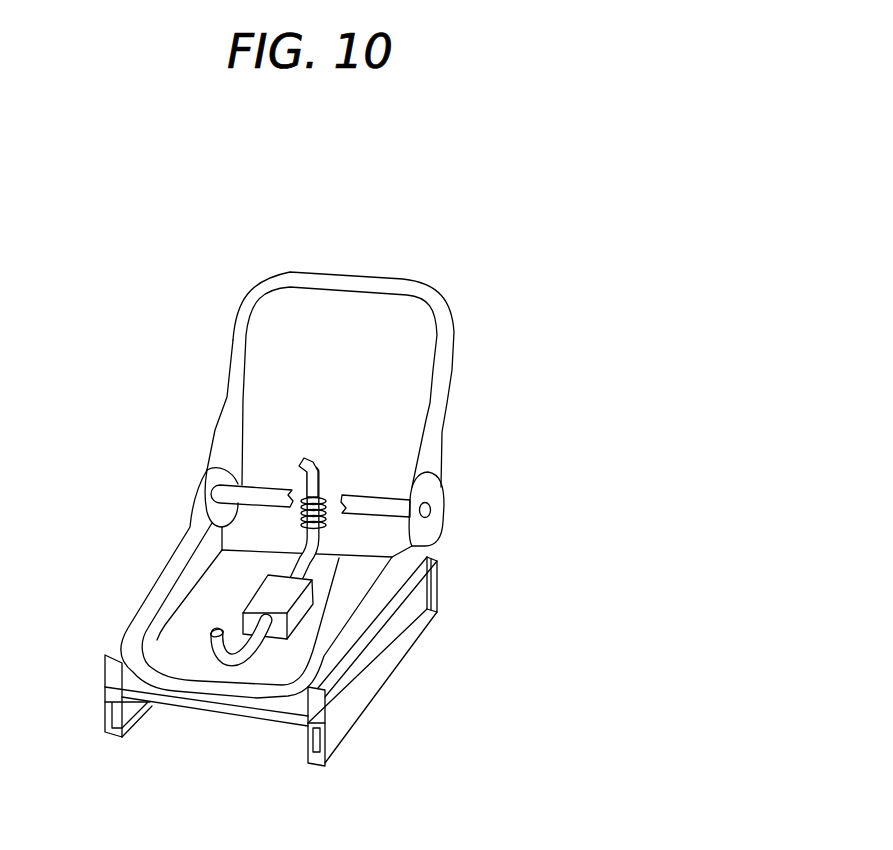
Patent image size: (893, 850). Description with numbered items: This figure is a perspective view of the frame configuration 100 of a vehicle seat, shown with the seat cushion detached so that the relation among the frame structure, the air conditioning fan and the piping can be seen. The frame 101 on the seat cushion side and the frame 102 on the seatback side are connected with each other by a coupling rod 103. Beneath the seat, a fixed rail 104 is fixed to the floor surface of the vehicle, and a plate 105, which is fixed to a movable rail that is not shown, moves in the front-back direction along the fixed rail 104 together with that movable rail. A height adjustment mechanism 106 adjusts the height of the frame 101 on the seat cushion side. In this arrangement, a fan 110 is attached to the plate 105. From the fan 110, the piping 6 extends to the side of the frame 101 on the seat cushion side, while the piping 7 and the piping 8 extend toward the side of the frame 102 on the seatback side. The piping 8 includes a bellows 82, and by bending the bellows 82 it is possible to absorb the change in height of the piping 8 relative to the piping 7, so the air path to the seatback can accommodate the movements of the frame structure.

The frame configuration 100 is at (493, 224).
The frame on the seat cushion side 101 is at (175, 567).
The frame on the seatback side 102 is at (455, 352).
The coupling rod 103 is at (382, 502).
The fixed rail 104 is at (343, 724).
The plate 105 is at (205, 706).
The height adjustment mechanism 106 is at (365, 648).
The fan 110 is at (272, 602).
The piping 6 is at (208, 642).
The piping 7 is at (320, 544).
The piping 8 is at (311, 460).
The bellows 82 is at (326, 498).